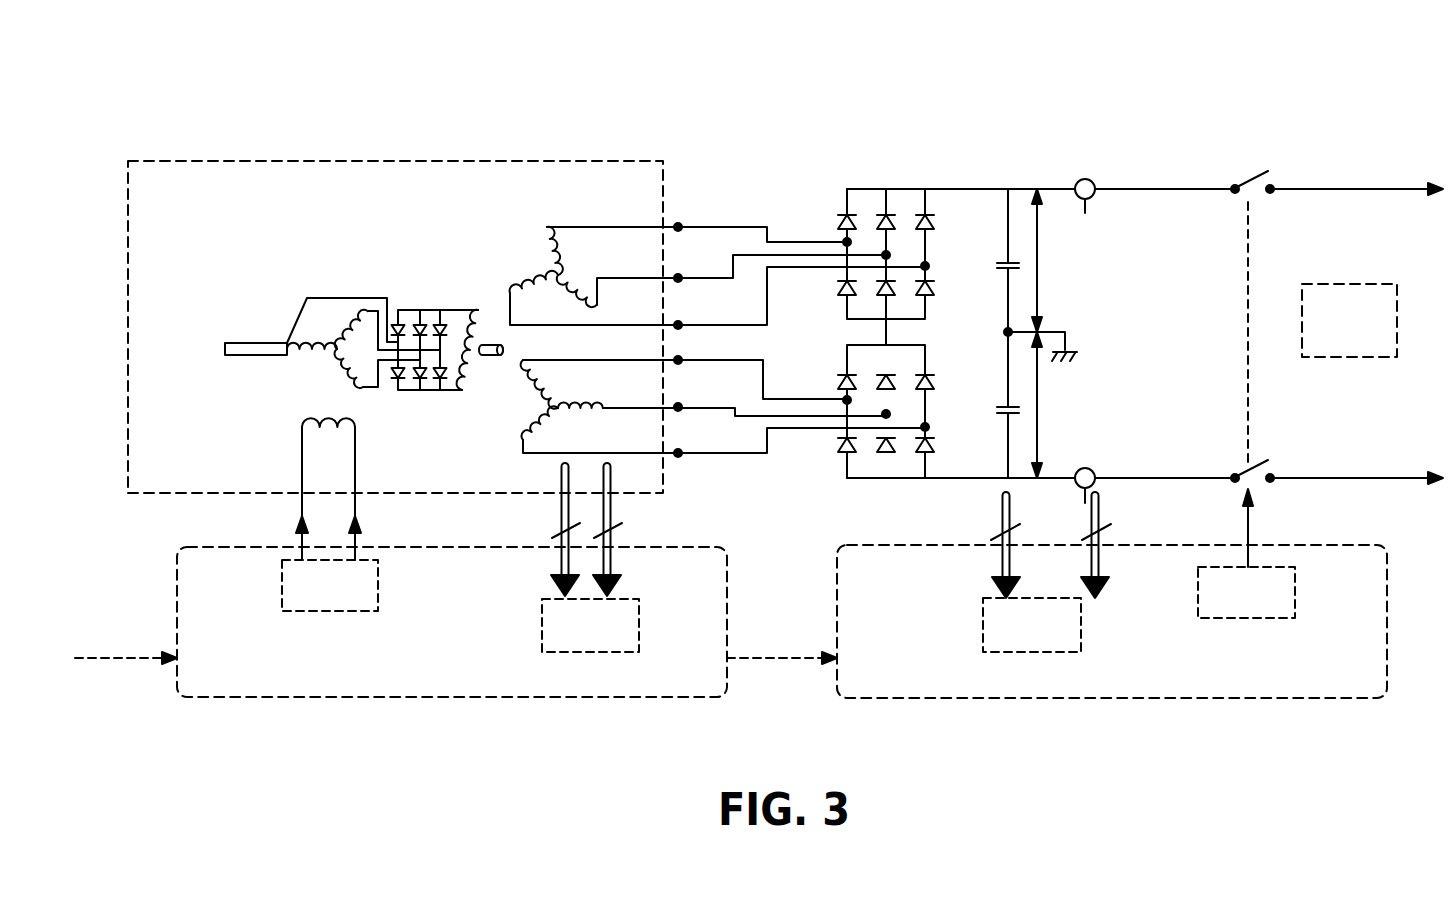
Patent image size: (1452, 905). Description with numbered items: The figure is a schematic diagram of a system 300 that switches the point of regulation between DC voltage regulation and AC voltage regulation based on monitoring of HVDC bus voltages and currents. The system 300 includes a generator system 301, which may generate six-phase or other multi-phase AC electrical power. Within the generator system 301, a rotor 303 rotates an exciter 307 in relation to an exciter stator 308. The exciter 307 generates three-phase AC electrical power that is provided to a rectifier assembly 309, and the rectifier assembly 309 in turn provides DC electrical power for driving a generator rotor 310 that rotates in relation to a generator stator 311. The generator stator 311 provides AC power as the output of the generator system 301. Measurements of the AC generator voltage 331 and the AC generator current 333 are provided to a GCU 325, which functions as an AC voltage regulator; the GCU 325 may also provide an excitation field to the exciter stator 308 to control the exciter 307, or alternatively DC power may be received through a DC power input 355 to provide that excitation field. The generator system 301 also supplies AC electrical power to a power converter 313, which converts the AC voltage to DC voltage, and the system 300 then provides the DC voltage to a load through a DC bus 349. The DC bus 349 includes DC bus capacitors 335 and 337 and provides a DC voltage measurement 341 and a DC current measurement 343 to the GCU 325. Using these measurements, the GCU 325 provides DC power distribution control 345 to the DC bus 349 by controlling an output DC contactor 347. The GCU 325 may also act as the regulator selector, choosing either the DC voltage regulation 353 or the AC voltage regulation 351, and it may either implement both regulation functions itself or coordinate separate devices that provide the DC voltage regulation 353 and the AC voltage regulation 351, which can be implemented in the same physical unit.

The system 300 is at (217, 82).
The generator system 301 is at (340, 160).
The rotor 303 is at (263, 342).
The exciter 307 is at (333, 297).
The exciter stator 308 is at (300, 458).
The rectifier assembly 309 is at (453, 309).
The generator rotor 310 is at (483, 362).
The generator stator 311 is at (580, 225).
The power converter 313 is at (935, 173).
The GCU 325 is at (282, 608).
The AC generator voltage 331 is at (560, 565).
The AC generator current 333 is at (612, 565).
The DC bus capacitor 335 is at (1038, 285).
The DC bus capacitor 337 is at (1038, 433).
The DC voltage measurement 341 is at (1000, 562).
The DC current measurement 343 is at (1100, 562).
The DC power distribution control 345 is at (1245, 535).
The output DC contactor 347 is at (1245, 186).
The DC bus 349 is at (1350, 283).
The AC voltage regulation 351 is at (309, 682).
The DC voltage regulation 353 is at (1276, 682).
The DC power input 355 is at (137, 662).